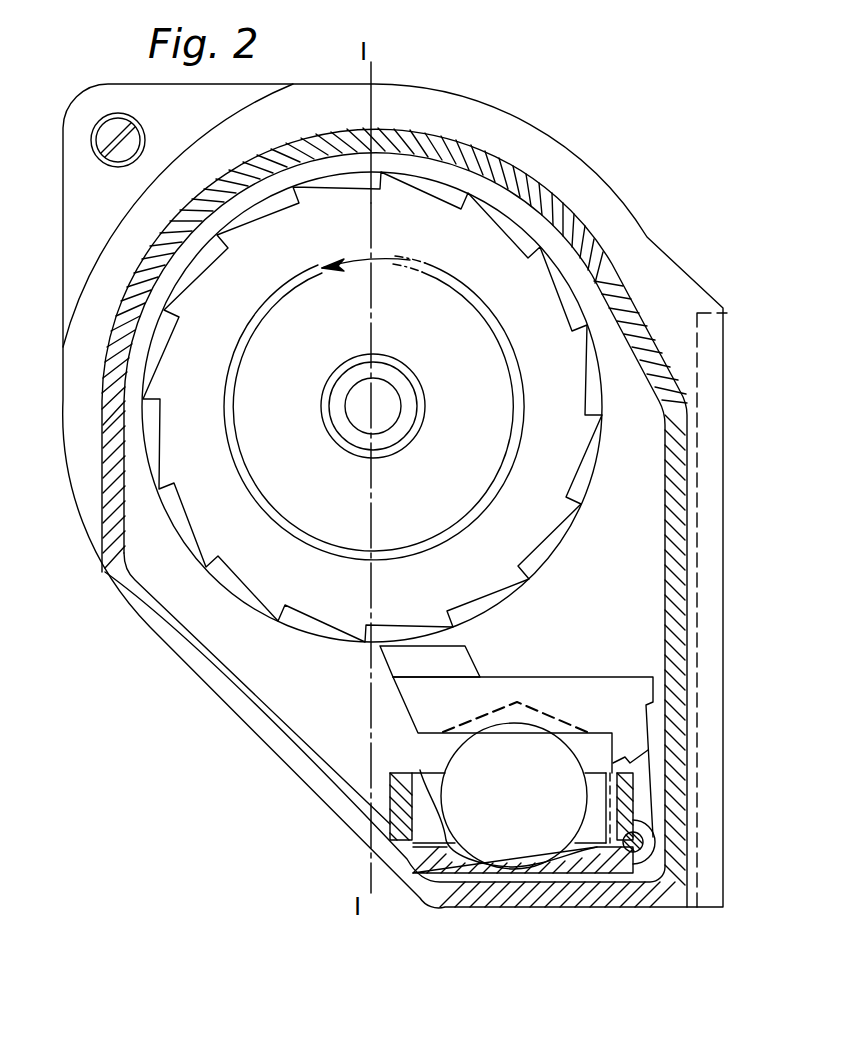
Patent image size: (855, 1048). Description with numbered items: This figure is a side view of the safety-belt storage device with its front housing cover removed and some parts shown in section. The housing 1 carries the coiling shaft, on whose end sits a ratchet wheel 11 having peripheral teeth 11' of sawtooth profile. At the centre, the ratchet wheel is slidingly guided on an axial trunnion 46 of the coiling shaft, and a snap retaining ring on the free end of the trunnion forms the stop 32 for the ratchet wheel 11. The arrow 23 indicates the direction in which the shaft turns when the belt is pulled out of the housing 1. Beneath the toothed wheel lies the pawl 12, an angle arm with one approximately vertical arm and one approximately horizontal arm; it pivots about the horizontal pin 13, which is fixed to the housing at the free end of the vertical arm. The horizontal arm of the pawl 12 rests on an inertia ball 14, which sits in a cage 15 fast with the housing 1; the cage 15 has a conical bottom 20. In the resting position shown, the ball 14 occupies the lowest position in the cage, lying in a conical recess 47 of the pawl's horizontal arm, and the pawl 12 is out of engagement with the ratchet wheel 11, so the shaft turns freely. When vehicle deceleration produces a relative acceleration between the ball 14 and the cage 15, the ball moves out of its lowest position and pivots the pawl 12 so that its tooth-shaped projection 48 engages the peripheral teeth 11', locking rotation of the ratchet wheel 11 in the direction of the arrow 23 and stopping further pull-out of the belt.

The housing 1 is at (190, 665).
The ratchet wheel 11 is at (395, 407).
The peripheral teeth 11' is at (394, 407).
The pawl 12 is at (622, 685).
The pin 13 is at (640, 840).
The ball 14 is at (543, 789).
The cage 15 is at (397, 783).
The conical bottom 20 is at (420, 770).
The arrow 23 is at (410, 260).
The stop 32 is at (395, 425).
The axial trunnion 46 is at (390, 392).
The conical recess 47 is at (520, 703).
The tooth-shaped projection 48 is at (467, 665).